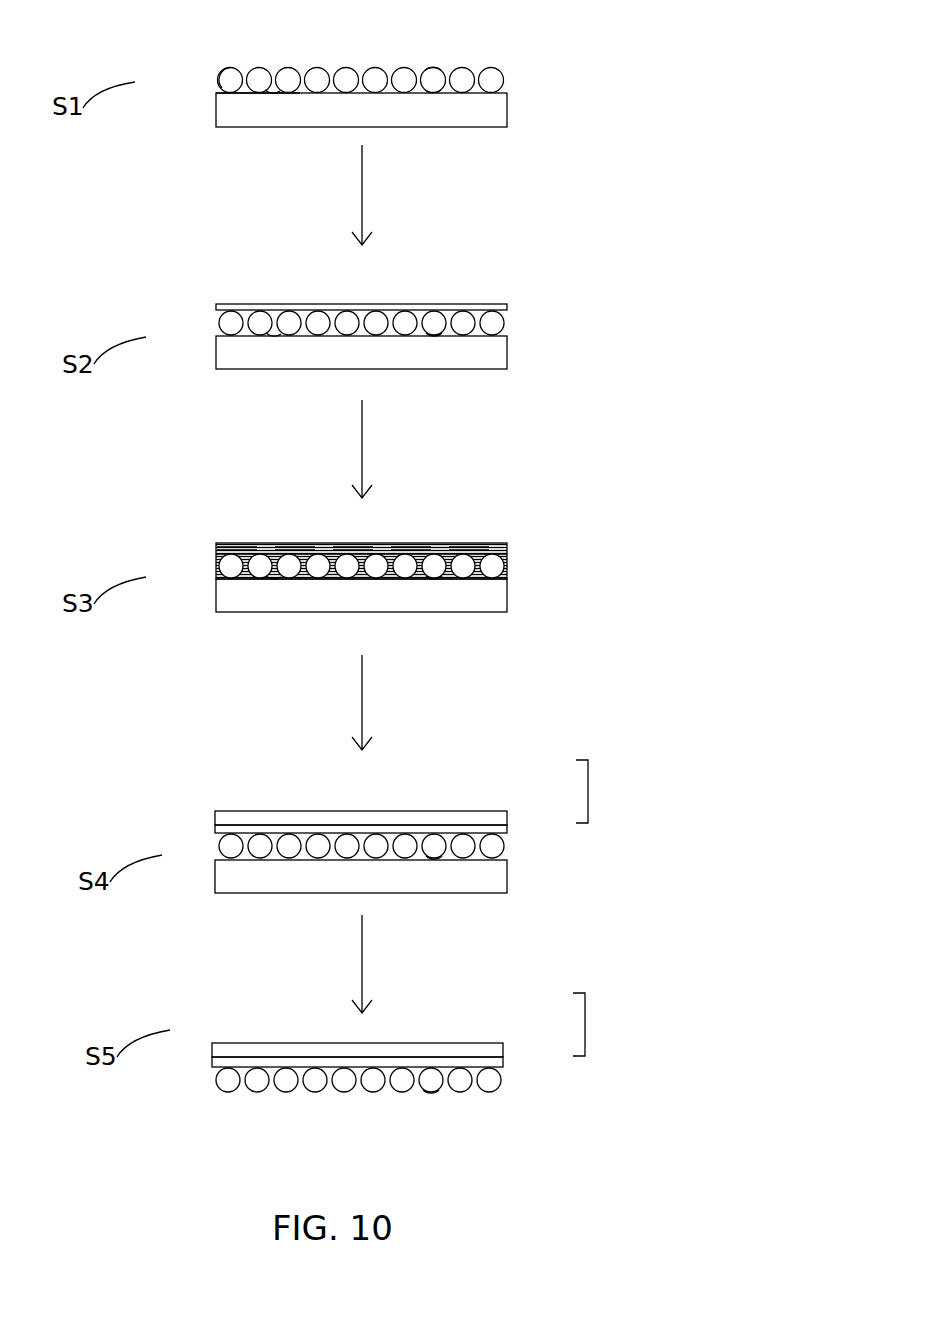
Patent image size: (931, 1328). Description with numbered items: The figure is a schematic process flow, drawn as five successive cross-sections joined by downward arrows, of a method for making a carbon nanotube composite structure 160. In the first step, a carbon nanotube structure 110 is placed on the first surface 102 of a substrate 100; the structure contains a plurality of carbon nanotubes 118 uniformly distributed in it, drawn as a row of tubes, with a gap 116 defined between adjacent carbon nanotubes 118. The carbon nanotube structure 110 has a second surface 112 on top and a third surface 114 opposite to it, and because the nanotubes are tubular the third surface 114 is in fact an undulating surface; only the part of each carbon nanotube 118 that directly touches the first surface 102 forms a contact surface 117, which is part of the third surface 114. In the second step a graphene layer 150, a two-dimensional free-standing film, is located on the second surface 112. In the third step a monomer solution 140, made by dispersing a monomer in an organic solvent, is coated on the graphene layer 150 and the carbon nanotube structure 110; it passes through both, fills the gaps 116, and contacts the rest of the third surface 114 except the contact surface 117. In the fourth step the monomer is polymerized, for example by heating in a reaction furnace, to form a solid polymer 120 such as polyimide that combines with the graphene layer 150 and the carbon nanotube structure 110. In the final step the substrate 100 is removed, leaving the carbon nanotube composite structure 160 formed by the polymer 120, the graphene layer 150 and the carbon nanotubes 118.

The substrate 100 is at (485, 117).
The first surface 102 is at (243, 92).
The carbon nanotube structure 110 is at (503, 70).
The second surface 112 is at (433, 67).
The third surface 114 is at (222, 88).
The gap 116 is at (275, 86).
The contact surface 117 is at (435, 92).
The carbon nanotube 118 is at (288, 82).
The polymer 120 is at (450, 811).
The monomer solution 140 is at (493, 520).
The graphene layer 150 is at (443, 307).
The carbon nanotube composite structure 160 is at (610, 908).